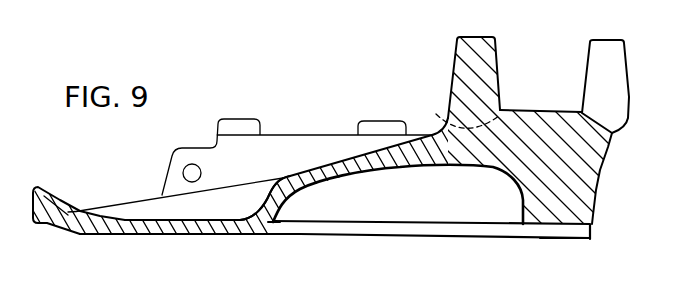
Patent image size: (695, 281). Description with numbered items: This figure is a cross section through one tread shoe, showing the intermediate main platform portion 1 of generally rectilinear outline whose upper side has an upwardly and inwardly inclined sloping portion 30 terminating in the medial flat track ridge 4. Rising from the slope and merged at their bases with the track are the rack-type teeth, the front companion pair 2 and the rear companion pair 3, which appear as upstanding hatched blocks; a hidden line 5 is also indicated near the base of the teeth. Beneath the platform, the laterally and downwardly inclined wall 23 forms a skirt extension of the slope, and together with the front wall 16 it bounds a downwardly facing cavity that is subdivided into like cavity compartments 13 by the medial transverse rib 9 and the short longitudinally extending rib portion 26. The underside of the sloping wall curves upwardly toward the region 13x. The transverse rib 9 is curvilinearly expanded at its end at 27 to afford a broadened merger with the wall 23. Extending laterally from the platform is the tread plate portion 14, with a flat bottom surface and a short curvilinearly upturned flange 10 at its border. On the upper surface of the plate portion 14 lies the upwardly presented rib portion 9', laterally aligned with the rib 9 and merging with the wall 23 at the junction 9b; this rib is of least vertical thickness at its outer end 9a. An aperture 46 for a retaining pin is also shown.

The intermediate main platform portion 1 is at (383, 150).
The front companion pair of rack-type teeth 2 is at (606, 40).
The rear companion pair of rack-type teeth 3 is at (458, 47).
The medial flat track ridge 4 is at (548, 113).
The hidden boundary line 5 is at (461, 113).
The medial transverse rib 9 is at (528, 243).
The outer end of rib portion 9' 9a is at (84, 201).
The junction between rib portion 9' and wall 23 9b is at (281, 178).
The laterally extending rib portion 9' is at (175, 185).
The curvilinearly upwardly extending flange 10 is at (43, 192).
The cavity compartment 13 is at (402, 208).
The region of compartment underside 13x is at (477, 170).
The tread plate portion 14 is at (153, 235).
The front wall 16 is at (302, 142).
The laterally and downwardly inclined wall 23 is at (263, 200).
The short longitudinally extending rib portion 26 is at (545, 195).
The curvilinearly expanded rib end 27 is at (276, 223).
The upwardly and inwardly inclined sloping portion 30 is at (340, 162).
The aperture 46 is at (190, 172).